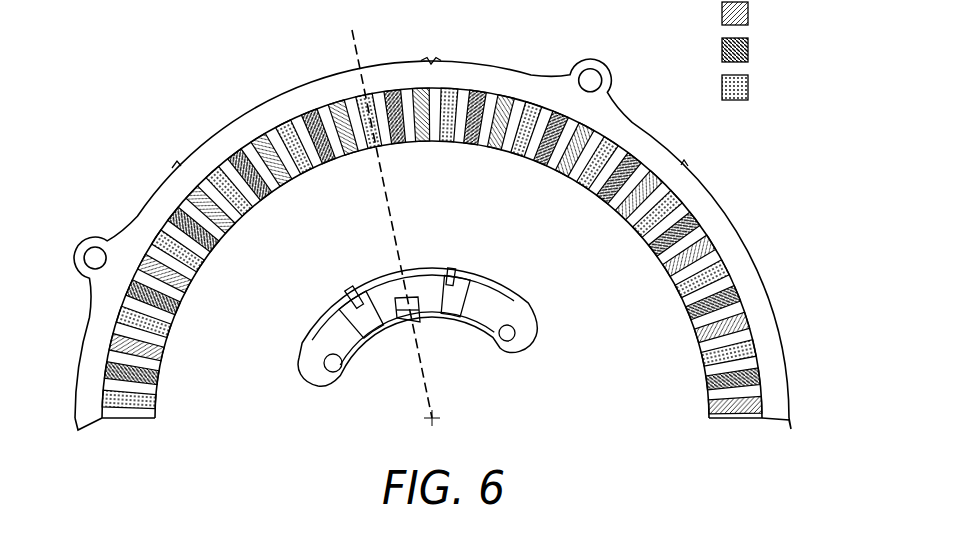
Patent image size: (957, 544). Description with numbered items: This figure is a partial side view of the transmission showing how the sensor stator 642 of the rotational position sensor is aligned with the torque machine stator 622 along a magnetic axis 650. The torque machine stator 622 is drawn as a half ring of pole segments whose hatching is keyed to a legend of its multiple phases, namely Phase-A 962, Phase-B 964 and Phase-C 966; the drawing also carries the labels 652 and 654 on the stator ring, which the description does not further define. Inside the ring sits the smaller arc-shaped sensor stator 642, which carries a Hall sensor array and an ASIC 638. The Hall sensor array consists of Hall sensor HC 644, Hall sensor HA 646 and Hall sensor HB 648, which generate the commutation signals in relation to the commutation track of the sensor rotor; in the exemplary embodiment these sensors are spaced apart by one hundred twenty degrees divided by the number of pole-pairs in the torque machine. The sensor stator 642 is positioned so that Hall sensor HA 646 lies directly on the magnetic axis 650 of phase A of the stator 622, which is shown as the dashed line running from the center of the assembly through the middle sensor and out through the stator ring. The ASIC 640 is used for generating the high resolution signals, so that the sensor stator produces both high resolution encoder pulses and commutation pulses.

The torque machine stator 622 is at (740, 215).
The ASIC 638 is at (362, 337).
The ASIC 640 is at (427, 313).
The sensor stator 642 is at (528, 348).
The Hall sensor HC 644 is at (352, 292).
The Hall sensor HA 646 is at (401, 281).
The Hall sensor HB 648 is at (454, 271).
The magnetic axis 650 is at (368, 21).
The magnet 652 is at (452, 210).
The magnet ring 654 is at (452, 88).
The Phase-A 962 is at (455, 208).
The Phase-B 964 is at (452, 214).
The Phase-C 966 is at (228, 62).